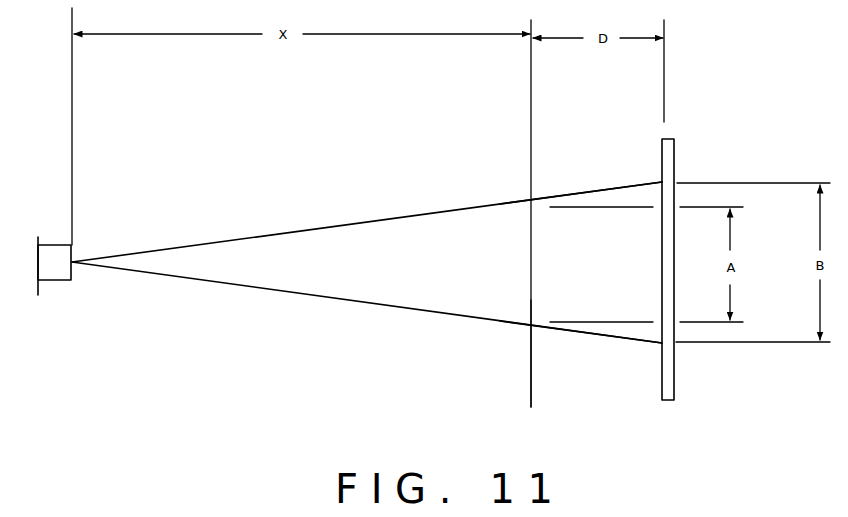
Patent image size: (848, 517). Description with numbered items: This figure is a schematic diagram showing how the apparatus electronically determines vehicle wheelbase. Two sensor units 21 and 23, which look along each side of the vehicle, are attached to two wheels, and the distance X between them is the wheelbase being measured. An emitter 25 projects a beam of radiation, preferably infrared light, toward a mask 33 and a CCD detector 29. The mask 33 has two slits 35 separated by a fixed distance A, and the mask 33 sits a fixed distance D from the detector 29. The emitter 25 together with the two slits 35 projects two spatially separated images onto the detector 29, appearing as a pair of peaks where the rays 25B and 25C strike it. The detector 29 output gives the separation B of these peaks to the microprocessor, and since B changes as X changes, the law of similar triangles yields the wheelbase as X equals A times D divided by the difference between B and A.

The sensor unit 21 is at (55, 221).
The emitter 25 is at (367, 262).
The ray 25B is at (609, 189).
The ray 25C is at (577, 333).
The sensor unit 23 is at (511, 181).
The mask 33 is at (531, 397).
The slits 35 is at (519, 213).
The CCD detector 29 is at (674, 383).